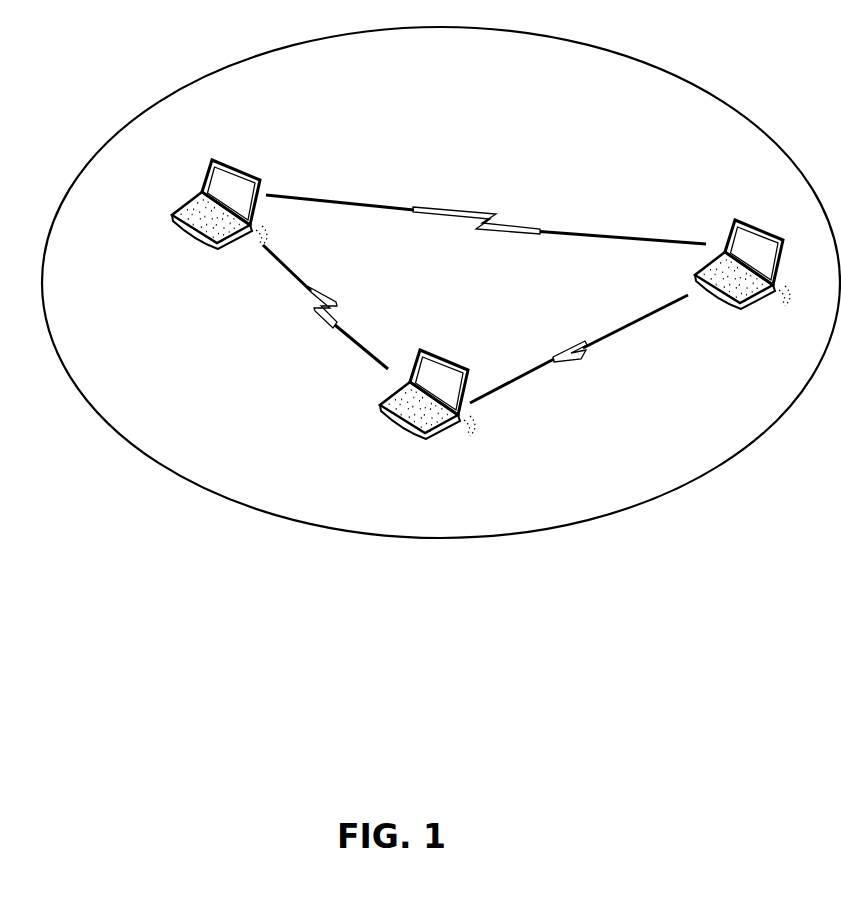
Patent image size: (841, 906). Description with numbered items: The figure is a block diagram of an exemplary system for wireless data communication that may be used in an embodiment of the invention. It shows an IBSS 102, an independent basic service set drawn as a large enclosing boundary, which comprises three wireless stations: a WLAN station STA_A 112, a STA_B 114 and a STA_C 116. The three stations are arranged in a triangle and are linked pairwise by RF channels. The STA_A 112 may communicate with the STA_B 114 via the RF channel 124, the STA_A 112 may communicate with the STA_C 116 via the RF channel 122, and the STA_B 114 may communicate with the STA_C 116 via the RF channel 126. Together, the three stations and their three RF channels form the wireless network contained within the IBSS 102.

The IBSS 102 is at (627, 53).
The WLAN station STA_A 112 is at (204, 163).
The STA_B 114 is at (412, 353).
The STA_C 116 is at (728, 220).
The RF channel 122 is at (413, 210).
The RF channel 124 is at (302, 278).
The RF channel 126 is at (580, 343).